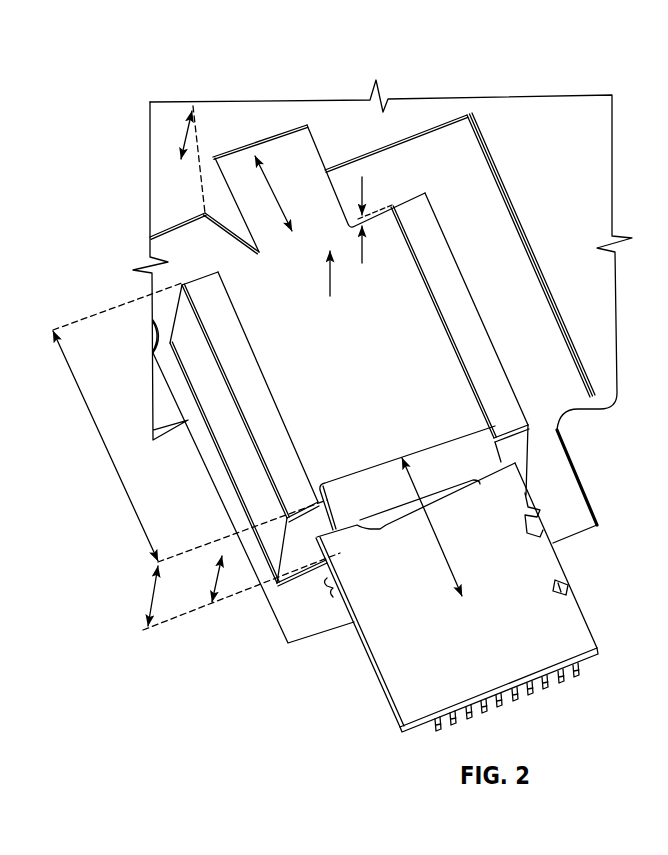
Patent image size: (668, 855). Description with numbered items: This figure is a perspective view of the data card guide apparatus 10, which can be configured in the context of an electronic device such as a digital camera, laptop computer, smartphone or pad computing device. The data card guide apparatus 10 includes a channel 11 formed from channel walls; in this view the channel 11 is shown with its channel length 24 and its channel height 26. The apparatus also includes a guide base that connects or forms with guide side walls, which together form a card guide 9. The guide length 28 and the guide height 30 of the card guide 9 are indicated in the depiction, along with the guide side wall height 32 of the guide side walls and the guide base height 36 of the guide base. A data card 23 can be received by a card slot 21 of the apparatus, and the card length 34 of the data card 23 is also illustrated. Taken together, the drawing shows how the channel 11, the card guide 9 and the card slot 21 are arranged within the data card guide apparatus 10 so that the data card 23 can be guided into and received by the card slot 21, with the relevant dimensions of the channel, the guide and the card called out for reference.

The card guide 9 is at (510, 340).
The data card guide apparatus 10 is at (524, 80).
The channel 11 is at (307, 125).
The card slot 21 is at (483, 452).
The data card 23 is at (575, 633).
The channel length 24 is at (274, 196).
The channel height 26 is at (183, 139).
The guide length 28 is at (107, 447).
The guide height 30 is at (153, 598).
The guide side wall height 32 is at (364, 187).
The card length 34 is at (440, 543).
The guide base height 36 is at (216, 580).